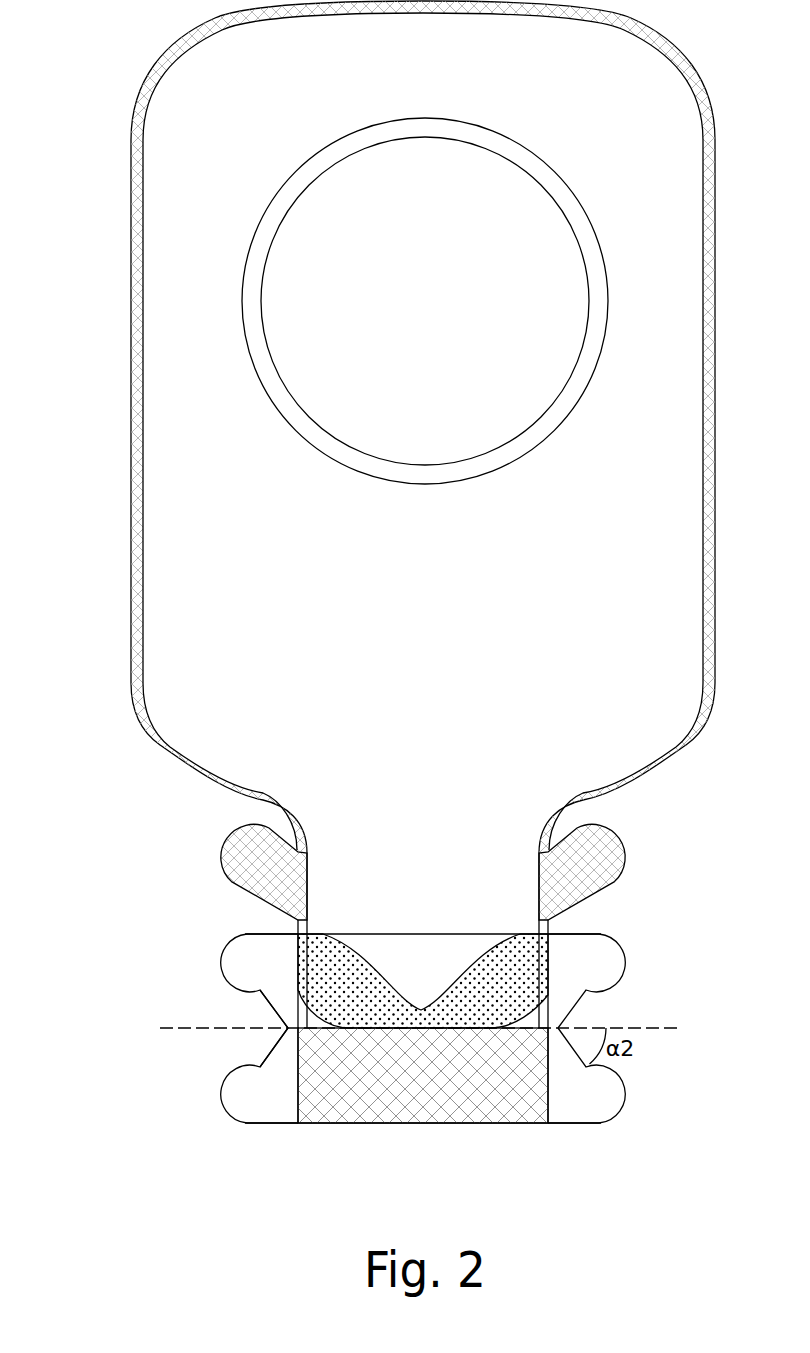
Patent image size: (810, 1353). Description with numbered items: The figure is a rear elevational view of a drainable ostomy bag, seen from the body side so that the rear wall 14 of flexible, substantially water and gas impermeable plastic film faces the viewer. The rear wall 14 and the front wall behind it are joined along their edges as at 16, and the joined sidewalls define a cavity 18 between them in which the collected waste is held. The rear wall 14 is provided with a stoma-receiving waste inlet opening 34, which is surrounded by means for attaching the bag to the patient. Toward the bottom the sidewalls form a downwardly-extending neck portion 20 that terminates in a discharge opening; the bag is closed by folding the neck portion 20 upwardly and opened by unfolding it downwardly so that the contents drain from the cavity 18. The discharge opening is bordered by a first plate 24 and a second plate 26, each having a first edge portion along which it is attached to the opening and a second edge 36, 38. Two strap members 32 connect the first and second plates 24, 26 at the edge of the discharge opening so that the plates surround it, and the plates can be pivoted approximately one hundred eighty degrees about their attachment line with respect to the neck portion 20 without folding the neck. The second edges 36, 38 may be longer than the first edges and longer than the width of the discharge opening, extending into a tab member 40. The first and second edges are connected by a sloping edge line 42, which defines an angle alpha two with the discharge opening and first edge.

The rear wall 14 is at (423, 514).
The joined edges of the sidewalls 16 is at (144, 470).
The cavity 18 is at (424, 548).
The neck portion 20 is at (423, 973).
The first plate 24 is at (444, 981).
The second plate 26 is at (423, 1075).
The strap members 32 is at (282, 1027).
The stoma-receiving waste inlet opening 34 is at (425, 301).
The second edge of the first plate 36 is at (258, 934).
The second edge of the second plate 38 is at (284, 1123).
The tab member 40 is at (596, 1100).
The sloping edge line 42 is at (582, 1003).